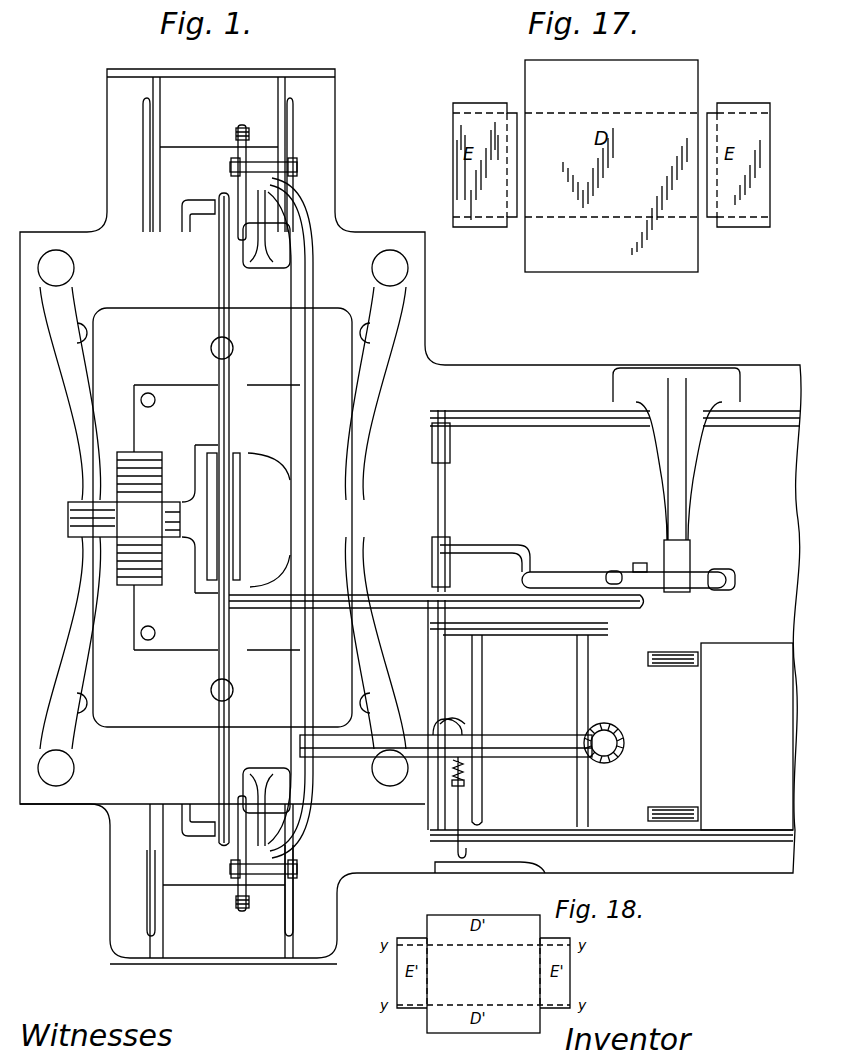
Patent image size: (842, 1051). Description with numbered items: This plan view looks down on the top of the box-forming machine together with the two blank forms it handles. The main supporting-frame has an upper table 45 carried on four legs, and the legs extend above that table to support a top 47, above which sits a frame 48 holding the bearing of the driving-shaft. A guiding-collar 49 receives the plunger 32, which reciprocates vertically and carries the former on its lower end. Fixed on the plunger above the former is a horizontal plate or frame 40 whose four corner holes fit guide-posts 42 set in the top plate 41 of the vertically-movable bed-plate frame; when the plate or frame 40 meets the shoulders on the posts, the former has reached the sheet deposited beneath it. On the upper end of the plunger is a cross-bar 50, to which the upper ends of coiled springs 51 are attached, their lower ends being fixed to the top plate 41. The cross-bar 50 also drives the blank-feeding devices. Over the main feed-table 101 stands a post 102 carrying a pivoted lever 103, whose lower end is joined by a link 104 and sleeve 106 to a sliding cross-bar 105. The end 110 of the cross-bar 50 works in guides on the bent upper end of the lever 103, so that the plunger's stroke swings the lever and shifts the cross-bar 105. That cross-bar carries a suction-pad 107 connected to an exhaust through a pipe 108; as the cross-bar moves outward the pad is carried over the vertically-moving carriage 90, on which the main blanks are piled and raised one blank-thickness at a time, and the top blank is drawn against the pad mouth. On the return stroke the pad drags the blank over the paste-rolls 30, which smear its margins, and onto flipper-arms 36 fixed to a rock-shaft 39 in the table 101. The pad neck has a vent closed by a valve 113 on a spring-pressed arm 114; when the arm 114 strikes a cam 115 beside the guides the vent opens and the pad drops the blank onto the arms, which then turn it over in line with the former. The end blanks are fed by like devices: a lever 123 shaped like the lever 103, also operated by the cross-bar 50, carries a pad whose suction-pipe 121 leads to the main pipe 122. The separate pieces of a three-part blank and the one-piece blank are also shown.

The upper table 45 is at (110, 186).
The top 47 is at (410, 516).
The lever 123 is at (234, 192).
The suction-pipe 121 is at (310, 828).
The guide-posts 42 is at (150, 395).
The coiled springs 51 is at (233, 348).
The cross-bar 50 is at (232, 376).
The top plate 41 is at (222, 517).
The horizontal plate or frame 40 is at (217, 517).
The guiding-collar 49 is at (236, 478).
The plunger 32 is at (238, 522).
The frame 48 is at (345, 528).
The sleeve 106 is at (582, 384).
The post 102 is at (688, 472).
The main feed-table 101 is at (756, 531).
The sliding cross-bar 105 is at (447, 512).
The link 104 is at (485, 556).
The end of the cross-bar 110 is at (638, 560).
The lever 103 is at (686, 592).
The rock-shaft 39 is at (526, 630).
The flipper-arms 36 is at (580, 664).
The paste-rolls 30 is at (676, 666).
The suction-pad 107 is at (458, 712).
The valve 113 is at (466, 722).
The vertically-moving carriage 90 is at (747, 736).
The main pipe 122 is at (618, 744).
The pipe 108 is at (528, 757).
The arm 114 is at (470, 800).
The cam 115 is at (495, 870).